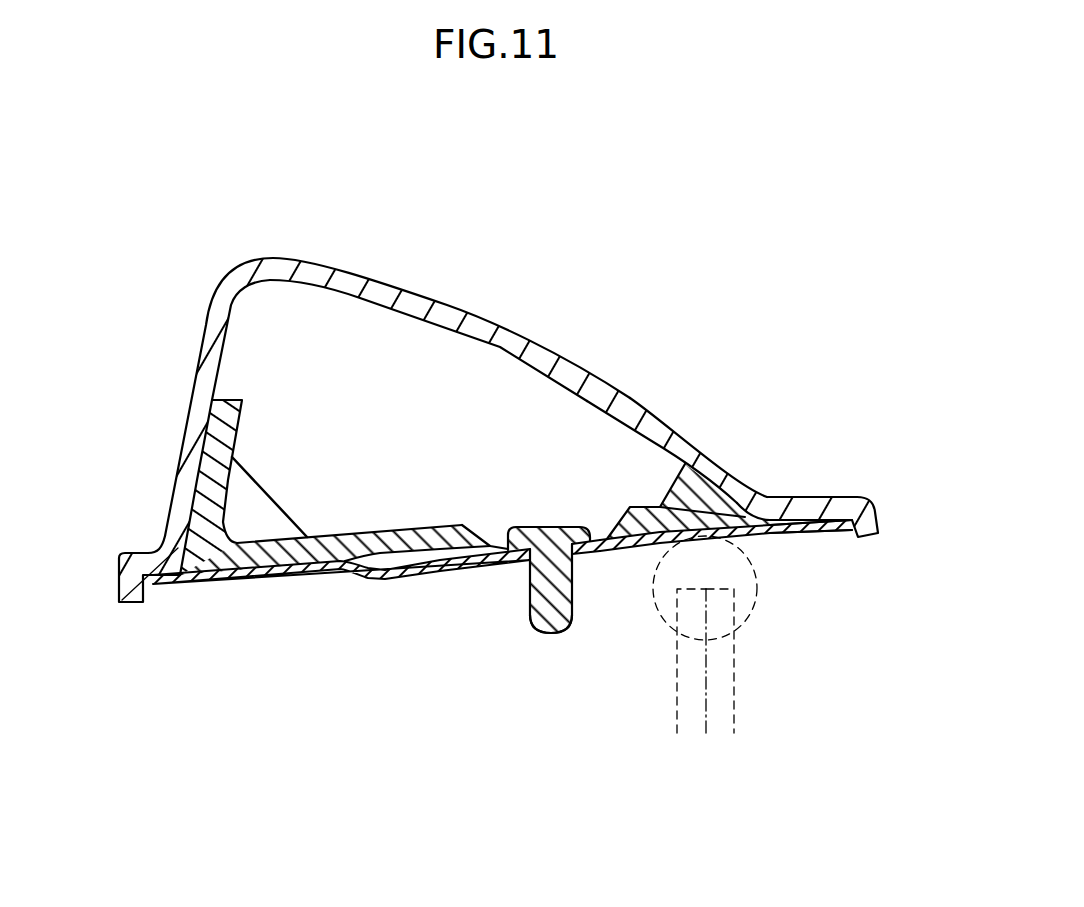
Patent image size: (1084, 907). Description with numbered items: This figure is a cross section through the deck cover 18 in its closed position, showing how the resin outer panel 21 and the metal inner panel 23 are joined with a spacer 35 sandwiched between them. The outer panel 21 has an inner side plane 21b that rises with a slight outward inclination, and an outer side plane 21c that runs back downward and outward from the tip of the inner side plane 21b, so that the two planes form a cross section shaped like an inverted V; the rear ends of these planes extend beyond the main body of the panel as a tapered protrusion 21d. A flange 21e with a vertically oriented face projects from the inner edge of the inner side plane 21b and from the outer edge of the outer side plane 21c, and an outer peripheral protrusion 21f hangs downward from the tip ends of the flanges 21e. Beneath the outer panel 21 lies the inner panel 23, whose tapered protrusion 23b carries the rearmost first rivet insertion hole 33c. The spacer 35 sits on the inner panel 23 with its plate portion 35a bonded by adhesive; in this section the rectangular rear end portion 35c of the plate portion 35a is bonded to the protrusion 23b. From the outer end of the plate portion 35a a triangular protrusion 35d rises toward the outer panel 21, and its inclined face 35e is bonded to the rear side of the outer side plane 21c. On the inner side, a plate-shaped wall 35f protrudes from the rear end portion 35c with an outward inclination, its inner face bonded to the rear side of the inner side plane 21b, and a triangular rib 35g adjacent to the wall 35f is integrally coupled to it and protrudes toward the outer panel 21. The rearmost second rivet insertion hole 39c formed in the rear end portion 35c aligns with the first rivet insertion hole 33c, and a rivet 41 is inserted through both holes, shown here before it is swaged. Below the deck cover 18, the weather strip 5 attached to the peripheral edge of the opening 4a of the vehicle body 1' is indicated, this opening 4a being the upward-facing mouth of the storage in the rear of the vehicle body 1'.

The deck cover 18 is at (662, 233).
The outer panel 21 is at (427, 293).
The inner side plane 21b is at (208, 346).
The outer side plane 21c is at (512, 327).
The tapered protrusion 21d is at (633, 398).
The flange 21e is at (133, 552).
The outer peripheral protrusion 21f is at (125, 578).
The inner panel 23 is at (706, 553).
The tapered protrusion 23b is at (770, 537).
The first rivet insertion hole 33c is at (547, 633).
The spacer 35 is at (328, 560).
The plate portion 35a is at (385, 553).
The rear end portion 35c is at (440, 550).
The triangular protrusion 35d is at (690, 498).
The inclined face 35e is at (735, 488).
The wall 35f is at (208, 512).
The rib 35g is at (263, 512).
The second rivet insertion hole 39c is at (575, 593).
The rivet 41 is at (558, 620).
The weather strip 5 is at (757, 603).
The opening 4a is at (678, 702).
The vehicle body 1' is at (741, 688).